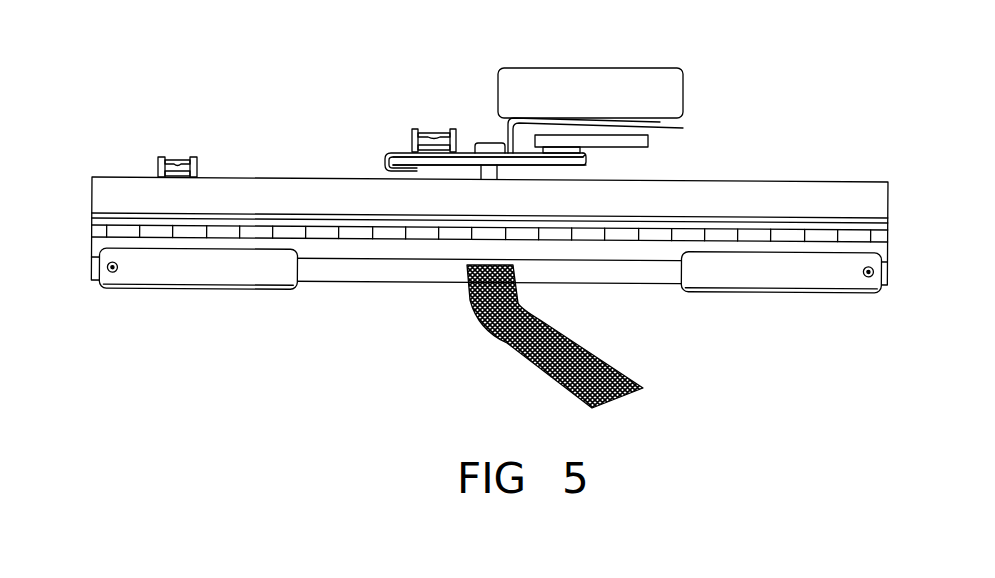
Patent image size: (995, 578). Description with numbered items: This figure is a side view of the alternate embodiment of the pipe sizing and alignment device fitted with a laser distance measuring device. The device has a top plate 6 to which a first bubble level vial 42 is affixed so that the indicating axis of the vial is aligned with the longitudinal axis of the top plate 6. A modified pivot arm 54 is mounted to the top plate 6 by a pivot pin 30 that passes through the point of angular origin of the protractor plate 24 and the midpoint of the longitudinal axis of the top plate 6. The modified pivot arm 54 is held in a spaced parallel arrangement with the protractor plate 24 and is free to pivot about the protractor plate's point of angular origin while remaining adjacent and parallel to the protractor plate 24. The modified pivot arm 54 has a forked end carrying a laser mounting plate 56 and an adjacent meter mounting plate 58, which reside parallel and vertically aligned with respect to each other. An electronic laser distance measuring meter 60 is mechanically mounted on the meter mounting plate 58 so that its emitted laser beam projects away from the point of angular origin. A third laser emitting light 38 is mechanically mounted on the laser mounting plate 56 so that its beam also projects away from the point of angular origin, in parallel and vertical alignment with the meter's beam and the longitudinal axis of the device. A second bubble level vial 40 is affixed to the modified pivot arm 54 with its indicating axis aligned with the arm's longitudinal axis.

The top plate 6 is at (280, 177).
The protractor plate 24 is at (585, 168).
The pivot pin 30 is at (488, 143).
The third laser emitting light 38 is at (650, 145).
The second bubble level vial 40 is at (435, 129).
The first bubble level vial 42 is at (180, 157).
The modified pivot arm 54 is at (386, 154).
The laser mounting plate 56 is at (587, 159).
The meter mounting plate 58 is at (683, 128).
The electronic laser distance measuring meter 60 is at (618, 68).